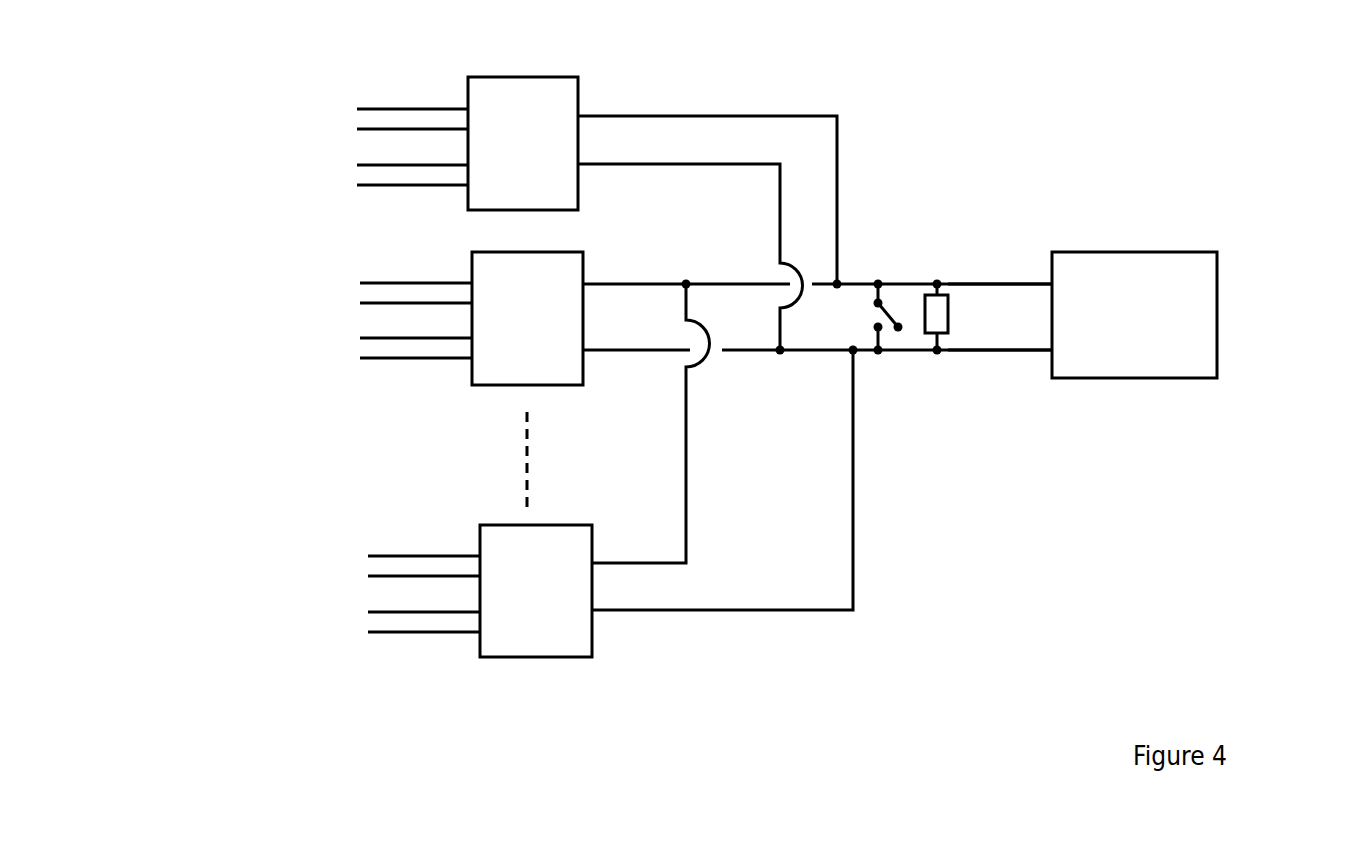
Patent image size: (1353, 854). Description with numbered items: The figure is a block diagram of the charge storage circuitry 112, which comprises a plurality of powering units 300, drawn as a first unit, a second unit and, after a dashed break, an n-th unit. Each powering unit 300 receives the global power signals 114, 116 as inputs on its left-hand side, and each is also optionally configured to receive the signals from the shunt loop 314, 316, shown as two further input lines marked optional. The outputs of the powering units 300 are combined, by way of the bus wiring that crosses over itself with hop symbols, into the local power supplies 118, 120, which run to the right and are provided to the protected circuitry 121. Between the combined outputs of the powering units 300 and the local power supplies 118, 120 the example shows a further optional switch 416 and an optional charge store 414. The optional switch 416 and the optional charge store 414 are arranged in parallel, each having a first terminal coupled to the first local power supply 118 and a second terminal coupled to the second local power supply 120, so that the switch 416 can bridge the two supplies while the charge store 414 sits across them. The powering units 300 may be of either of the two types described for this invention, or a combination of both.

The charge storage circuitry 112 is at (748, 628).
The global power signal 114 is at (355, 109).
The global power signal 116 is at (355, 130).
The first local power supply 118 is at (1035, 276).
The second local power supply 120 is at (1035, 353).
The protected circuitry 121 is at (1219, 358).
The powering unit 300 is at (530, 367).
The shunt loop signal 314 is at (355, 170).
The shunt loop signal 316 is at (355, 190).
The optional charge store 414 is at (937, 338).
The optional switch 416 is at (890, 300).